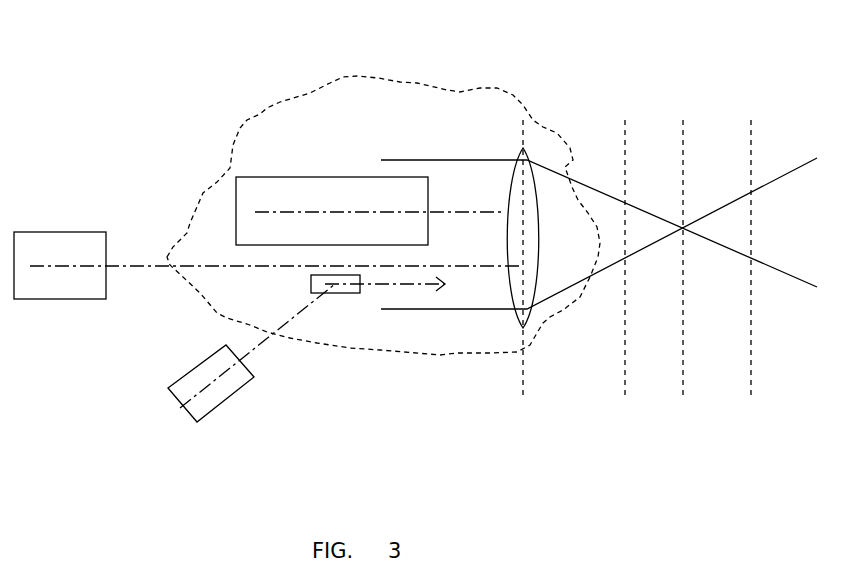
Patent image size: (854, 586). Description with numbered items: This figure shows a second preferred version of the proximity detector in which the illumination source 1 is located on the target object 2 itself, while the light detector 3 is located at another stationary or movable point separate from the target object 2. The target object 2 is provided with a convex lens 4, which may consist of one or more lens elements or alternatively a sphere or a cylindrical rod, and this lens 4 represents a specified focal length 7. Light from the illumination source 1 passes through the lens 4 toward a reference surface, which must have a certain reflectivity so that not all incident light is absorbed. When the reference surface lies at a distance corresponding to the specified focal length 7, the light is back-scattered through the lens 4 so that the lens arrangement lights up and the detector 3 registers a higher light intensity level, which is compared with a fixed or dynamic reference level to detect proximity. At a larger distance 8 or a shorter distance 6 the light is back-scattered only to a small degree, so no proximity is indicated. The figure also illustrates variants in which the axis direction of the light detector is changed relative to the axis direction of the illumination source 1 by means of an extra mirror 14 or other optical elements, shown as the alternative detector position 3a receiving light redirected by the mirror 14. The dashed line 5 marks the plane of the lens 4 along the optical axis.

The illumination source 1 is at (335, 190).
The target object 2 is at (547, 147).
The light detector 3 is at (51, 280).
The light detector variant 3a is at (210, 382).
The convex lens 4 is at (517, 200).
The lens plane 5 is at (521, 281).
The shorter distance reference surface 6 is at (621, 281).
The specified focal length 7 is at (682, 281).
The larger distance reference surface 8 is at (750, 281).
The extra mirror 14 is at (337, 292).